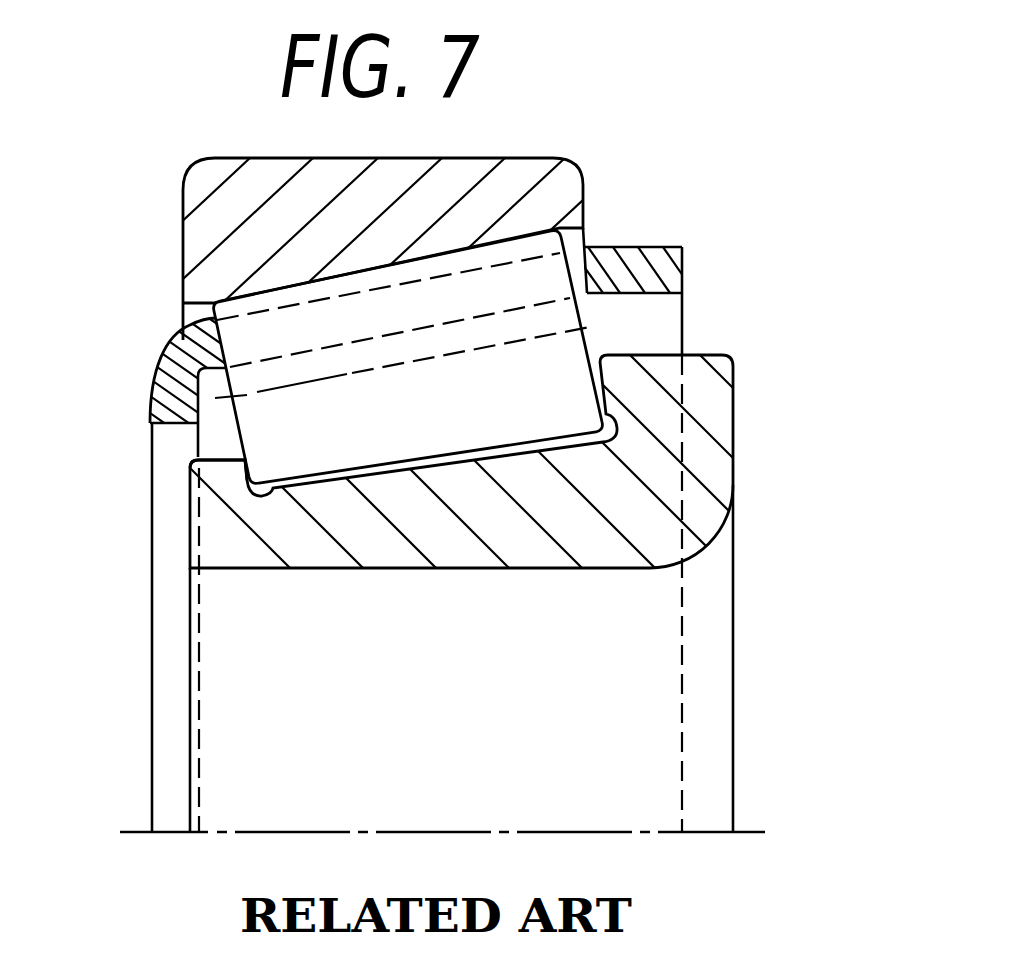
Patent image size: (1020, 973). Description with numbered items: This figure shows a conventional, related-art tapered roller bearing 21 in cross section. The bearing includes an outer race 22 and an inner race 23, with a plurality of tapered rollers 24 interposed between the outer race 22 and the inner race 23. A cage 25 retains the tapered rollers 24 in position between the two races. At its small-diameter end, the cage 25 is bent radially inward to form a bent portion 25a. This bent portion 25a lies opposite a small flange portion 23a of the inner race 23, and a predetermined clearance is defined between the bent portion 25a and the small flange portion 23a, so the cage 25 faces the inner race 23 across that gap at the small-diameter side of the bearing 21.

The tapered roller bearing 21 is at (478, 495).
The outer race 22 is at (183, 233).
The inner race 23 is at (262, 543).
The small flange portion 23a is at (227, 473).
The tapered rollers 24 is at (476, 440).
The cage 25 is at (174, 348).
The bent portion 25a is at (178, 389).